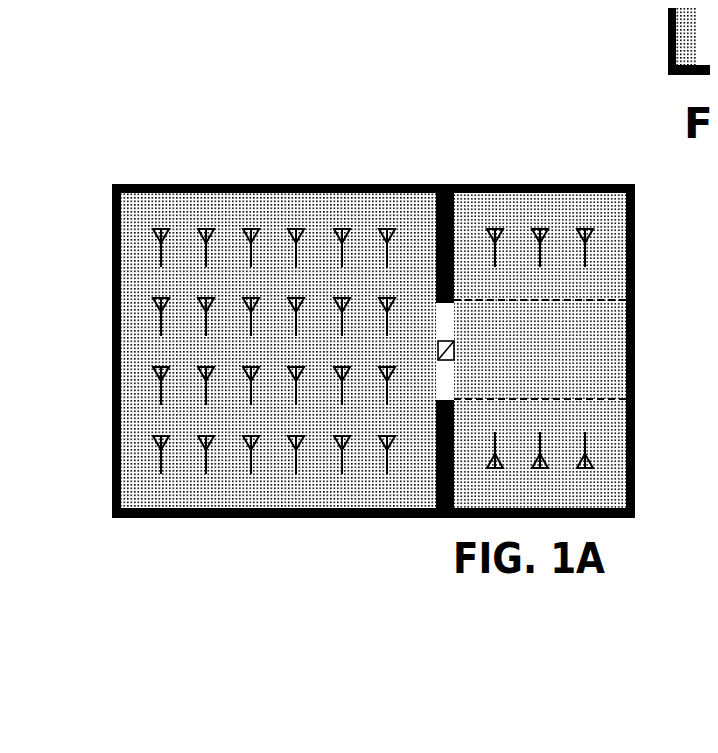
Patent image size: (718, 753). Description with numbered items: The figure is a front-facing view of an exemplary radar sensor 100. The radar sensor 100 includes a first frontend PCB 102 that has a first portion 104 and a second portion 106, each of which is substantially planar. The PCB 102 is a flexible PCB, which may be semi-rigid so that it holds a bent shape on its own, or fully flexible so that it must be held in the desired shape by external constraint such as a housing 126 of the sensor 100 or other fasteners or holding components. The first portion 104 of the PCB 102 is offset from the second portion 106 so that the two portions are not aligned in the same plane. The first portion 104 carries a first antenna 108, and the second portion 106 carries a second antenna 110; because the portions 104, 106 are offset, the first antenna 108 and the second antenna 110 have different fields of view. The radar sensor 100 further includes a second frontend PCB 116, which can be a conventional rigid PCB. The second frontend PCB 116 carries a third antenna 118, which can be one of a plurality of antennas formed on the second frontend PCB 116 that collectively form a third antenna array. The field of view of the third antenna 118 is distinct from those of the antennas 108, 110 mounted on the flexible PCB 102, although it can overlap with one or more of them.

The radar sensor 100 is at (266, 53).
The first frontend PCB 102 is at (550, 190).
The first portion 104 is at (605, 283).
The second portion 106 is at (603, 447).
The first antenna 108 is at (530, 218).
The second antenna 110 is at (585, 448).
The second frontend PCB 116 is at (232, 200).
The third antenna 118 is at (375, 220).
The housing 126 is at (297, 509).